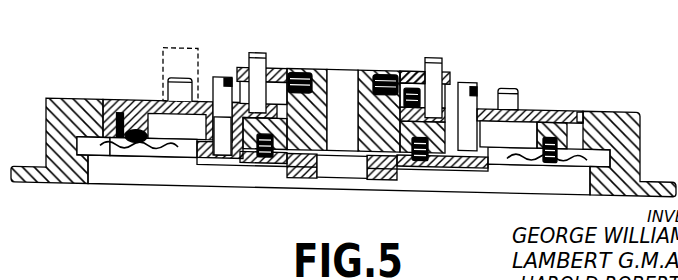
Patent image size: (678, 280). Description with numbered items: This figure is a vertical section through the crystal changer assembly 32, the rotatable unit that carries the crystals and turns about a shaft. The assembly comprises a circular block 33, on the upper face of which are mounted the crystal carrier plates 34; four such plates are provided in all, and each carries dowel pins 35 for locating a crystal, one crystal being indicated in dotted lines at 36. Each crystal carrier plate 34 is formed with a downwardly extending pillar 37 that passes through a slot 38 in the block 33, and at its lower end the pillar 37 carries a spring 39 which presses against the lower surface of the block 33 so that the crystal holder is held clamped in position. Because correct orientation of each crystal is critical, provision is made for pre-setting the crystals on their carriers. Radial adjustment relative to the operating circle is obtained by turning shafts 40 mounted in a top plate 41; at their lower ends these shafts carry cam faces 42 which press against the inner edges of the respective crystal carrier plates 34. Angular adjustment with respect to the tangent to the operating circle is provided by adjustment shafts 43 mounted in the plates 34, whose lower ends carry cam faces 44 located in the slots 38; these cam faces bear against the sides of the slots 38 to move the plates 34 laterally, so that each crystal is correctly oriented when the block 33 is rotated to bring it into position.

The crystal changer assembly 32 is at (677, 144).
The circular block 33 is at (607, 98).
The crystal carrier plates 34 is at (550, 98).
The dowel pins 35 is at (506, 76).
The crystal 36 is at (172, 56).
The pillar 37 is at (537, 117).
The slot 38 is at (183, 150).
The spring 39 is at (160, 146).
The shafts 40 is at (258, 47).
The top plate 41 is at (405, 61).
The cam faces 42 is at (450, 90).
The adjustment shafts 43 is at (220, 72).
The cam faces 44 is at (221, 126).